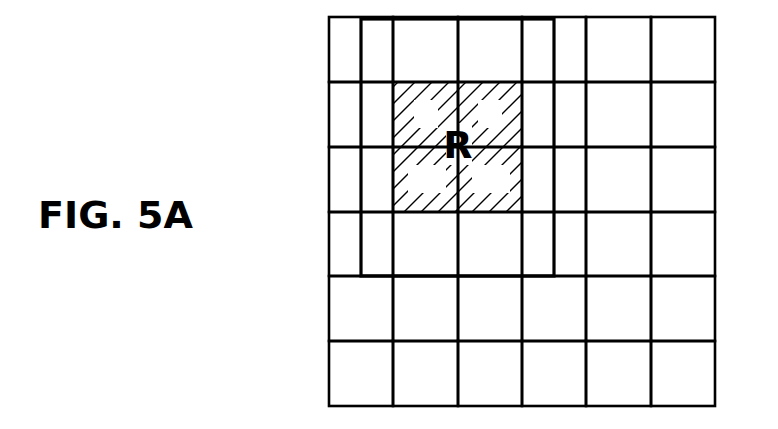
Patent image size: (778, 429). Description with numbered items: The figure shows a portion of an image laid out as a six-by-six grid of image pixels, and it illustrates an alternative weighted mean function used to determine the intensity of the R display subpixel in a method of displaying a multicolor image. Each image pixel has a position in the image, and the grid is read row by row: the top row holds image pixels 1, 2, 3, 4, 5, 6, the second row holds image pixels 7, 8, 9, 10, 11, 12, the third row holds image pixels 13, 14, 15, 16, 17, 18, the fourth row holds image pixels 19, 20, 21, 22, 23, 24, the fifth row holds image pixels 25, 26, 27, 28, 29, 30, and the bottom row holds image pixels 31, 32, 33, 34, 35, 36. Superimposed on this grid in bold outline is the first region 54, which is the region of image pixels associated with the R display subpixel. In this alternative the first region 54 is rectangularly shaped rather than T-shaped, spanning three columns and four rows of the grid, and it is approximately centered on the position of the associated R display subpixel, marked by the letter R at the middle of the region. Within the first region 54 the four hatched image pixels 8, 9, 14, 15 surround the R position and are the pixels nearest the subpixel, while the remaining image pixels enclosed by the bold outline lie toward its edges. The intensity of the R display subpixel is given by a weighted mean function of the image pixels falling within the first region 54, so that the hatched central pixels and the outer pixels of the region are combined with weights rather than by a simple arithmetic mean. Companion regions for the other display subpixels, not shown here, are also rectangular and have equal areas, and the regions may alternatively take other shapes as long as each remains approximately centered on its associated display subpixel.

The first region 54 is at (361, 68).
The image pixel 1 is at (361, 49).
The image pixel 2 is at (425, 49).
The image pixel 3 is at (490, 49).
The image pixel 4 is at (554, 49).
The image pixel 5 is at (618, 49).
The image pixel 6 is at (683, 49).
The image pixel 7 is at (361, 114).
The image pixel 8 is at (425, 114).
The image pixel 9 is at (490, 114).
The image pixel 10 is at (554, 114).
The image pixel 11 is at (618, 114).
The image pixel 12 is at (683, 114).
The image pixel 13 is at (361, 179).
The image pixel 14 is at (425, 179).
The image pixel 15 is at (490, 179).
The image pixel 16 is at (554, 179).
The image pixel 17 is at (618, 179).
The image pixel 18 is at (683, 179).
The image pixel 19 is at (361, 244).
The image pixel 20 is at (425, 244).
The image pixel 21 is at (490, 244).
The image pixel 22 is at (554, 244).
The image pixel 23 is at (618, 244).
The image pixel 24 is at (683, 244).
The image pixel 25 is at (361, 308).
The image pixel 26 is at (425, 308).
The image pixel 27 is at (490, 308).
The image pixel 28 is at (554, 308).
The image pixel 29 is at (618, 308).
The image pixel 30 is at (683, 308).
The image pixel 31 is at (361, 373).
The image pixel 32 is at (425, 373).
The image pixel 33 is at (490, 373).
The image pixel 34 is at (554, 373).
The image pixel 35 is at (618, 373).
The image pixel 36 is at (683, 373).